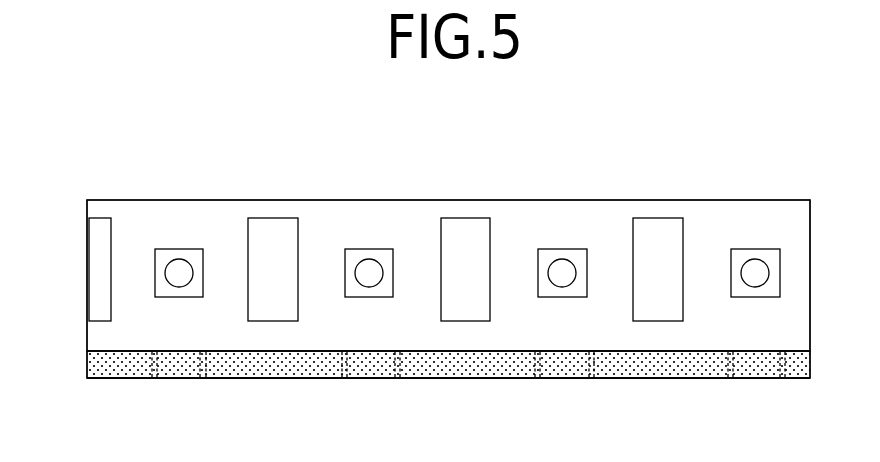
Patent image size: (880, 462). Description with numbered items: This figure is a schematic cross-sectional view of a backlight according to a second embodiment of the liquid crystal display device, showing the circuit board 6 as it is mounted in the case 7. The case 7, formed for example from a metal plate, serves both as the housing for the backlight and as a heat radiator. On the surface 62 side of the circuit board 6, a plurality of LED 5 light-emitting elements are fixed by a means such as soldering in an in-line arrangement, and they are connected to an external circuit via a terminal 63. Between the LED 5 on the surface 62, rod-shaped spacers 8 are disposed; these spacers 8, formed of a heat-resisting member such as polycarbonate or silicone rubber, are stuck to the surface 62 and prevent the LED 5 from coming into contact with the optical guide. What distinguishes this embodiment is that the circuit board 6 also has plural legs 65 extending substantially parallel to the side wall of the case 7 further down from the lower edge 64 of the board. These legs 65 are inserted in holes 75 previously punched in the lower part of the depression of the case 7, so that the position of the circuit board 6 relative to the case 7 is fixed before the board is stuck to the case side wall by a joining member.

The LED 5 is at (180, 248).
The circuit board 6 is at (778, 208).
The case 7 is at (800, 360).
The spacer 8 is at (273, 218).
The surface 62 is at (797, 248).
The terminal 63 is at (98, 222).
The lower edge 64 is at (797, 350).
The leg 65 is at (755, 368).
The hole 75 is at (342, 363).